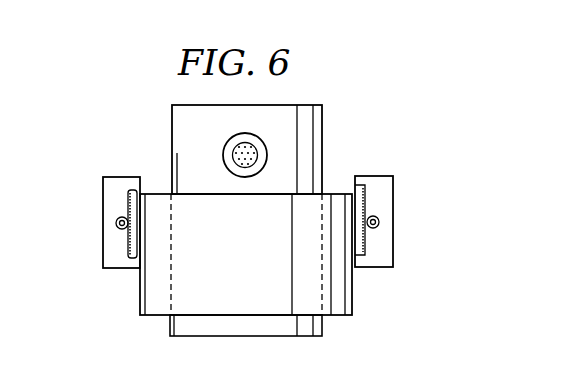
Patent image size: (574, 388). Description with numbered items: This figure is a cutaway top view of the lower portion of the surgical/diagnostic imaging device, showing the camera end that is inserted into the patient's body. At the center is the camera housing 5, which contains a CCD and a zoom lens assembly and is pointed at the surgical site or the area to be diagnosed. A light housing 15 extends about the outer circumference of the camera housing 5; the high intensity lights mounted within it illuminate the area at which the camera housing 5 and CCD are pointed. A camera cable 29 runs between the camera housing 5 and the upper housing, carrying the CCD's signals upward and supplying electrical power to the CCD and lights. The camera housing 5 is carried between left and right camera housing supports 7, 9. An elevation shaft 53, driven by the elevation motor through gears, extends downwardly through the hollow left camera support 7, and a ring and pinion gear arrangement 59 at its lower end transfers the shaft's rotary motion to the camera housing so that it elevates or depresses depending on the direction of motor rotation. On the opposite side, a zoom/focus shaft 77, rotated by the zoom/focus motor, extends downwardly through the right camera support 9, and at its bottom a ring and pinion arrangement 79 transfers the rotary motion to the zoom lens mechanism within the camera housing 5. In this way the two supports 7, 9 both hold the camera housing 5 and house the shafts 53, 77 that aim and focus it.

The camera housing 5 is at (323, 133).
The left camera housing support 7 is at (103, 258).
The right camera housing support 9 is at (394, 257).
The light housing 15 is at (340, 318).
The camera cable 29 is at (226, 148).
The elevation shaft 53 is at (116, 219).
The ring and pinion gear arrangement 59 is at (110, 226).
The zoom/focus shaft 77 is at (380, 222).
The ring and pinion arrangement 79 is at (378, 214).